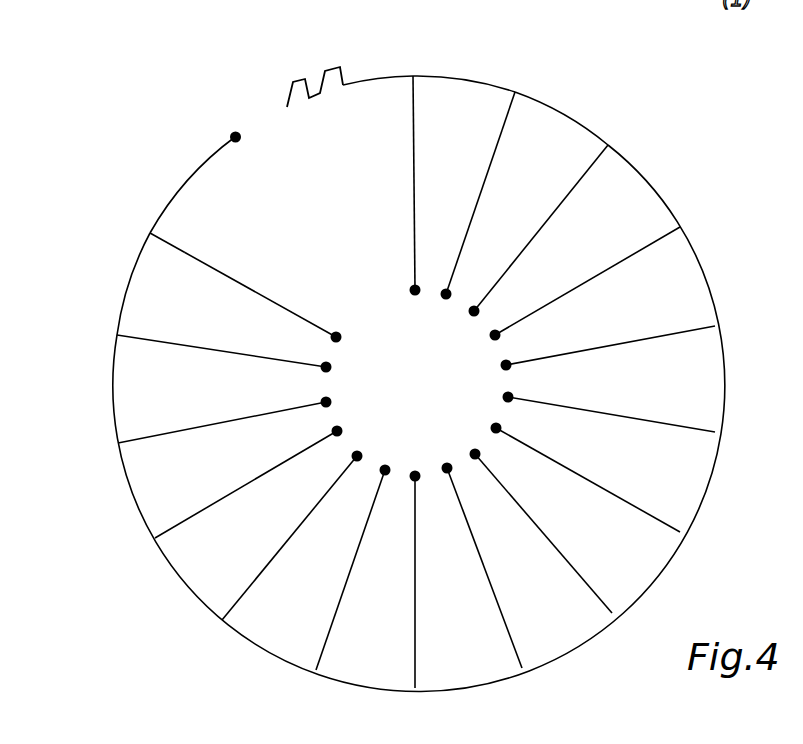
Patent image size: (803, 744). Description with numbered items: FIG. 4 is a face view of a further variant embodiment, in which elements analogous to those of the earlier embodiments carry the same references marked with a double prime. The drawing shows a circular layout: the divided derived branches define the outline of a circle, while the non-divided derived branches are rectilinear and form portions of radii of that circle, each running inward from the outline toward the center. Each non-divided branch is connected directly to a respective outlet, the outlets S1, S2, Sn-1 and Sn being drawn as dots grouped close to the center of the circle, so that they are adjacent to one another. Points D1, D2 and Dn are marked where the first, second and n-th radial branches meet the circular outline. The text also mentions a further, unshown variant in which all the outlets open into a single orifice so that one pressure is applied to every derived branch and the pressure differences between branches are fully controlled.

The first rim node element D1 is at (415, 75).
The second rim node element D2 is at (516, 92).
The n-th rim node element Dn is at (151, 234).
The outlet S1 is at (410, 289).
The outlet S2 is at (445, 299).
The outlet Sn-1 is at (331, 369).
The outlet Sn is at (356, 318).